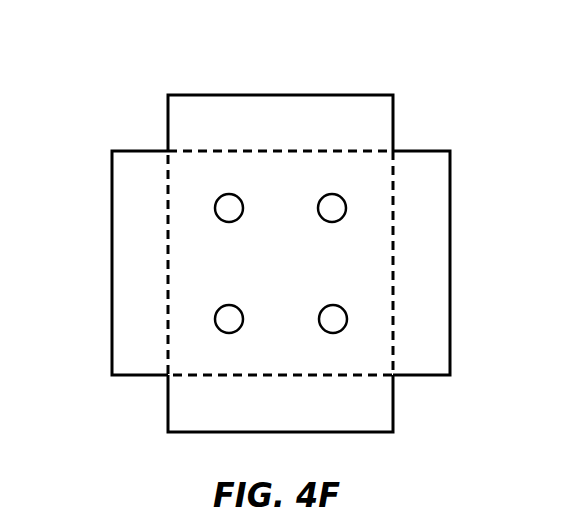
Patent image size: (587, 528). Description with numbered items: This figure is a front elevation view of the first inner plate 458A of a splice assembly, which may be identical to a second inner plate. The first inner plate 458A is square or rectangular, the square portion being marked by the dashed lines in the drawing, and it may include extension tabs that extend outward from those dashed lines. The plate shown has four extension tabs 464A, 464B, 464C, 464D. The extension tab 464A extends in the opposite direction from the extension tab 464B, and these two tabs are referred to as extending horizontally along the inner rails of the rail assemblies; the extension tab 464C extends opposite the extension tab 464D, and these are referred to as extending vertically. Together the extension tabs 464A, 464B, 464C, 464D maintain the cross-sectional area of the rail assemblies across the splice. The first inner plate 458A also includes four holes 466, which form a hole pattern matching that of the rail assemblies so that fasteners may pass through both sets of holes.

The first inner plate 458A is at (271, 243).
The extension tab 464A is at (157, 150).
The extension tab 464B is at (410, 150).
The extension tab 464C is at (278, 93).
The extension tab 464D is at (168, 410).
The holes 466 is at (338, 193).